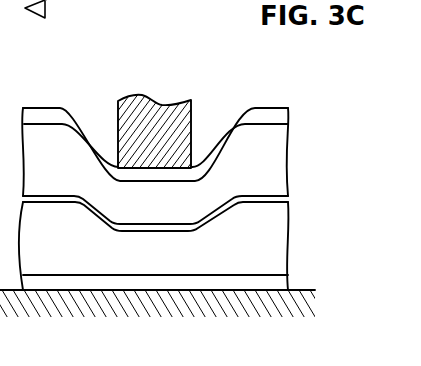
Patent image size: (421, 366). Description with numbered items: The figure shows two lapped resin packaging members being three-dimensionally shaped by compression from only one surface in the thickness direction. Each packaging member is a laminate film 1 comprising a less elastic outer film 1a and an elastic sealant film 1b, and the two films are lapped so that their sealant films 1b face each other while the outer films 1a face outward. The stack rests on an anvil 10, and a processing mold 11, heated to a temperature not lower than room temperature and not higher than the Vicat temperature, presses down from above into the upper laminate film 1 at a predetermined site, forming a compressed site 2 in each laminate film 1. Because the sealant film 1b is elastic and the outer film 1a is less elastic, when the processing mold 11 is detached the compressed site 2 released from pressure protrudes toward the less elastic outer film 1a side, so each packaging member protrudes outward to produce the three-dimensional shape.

The laminate film 1 is at (202, 197).
The less elastic outer film 1a is at (276, 116).
The sealant film 1b is at (271, 158).
The compressed site 2 is at (203, 131).
The anvil 10 is at (312, 305).
The processing mold 11 is at (160, 110).